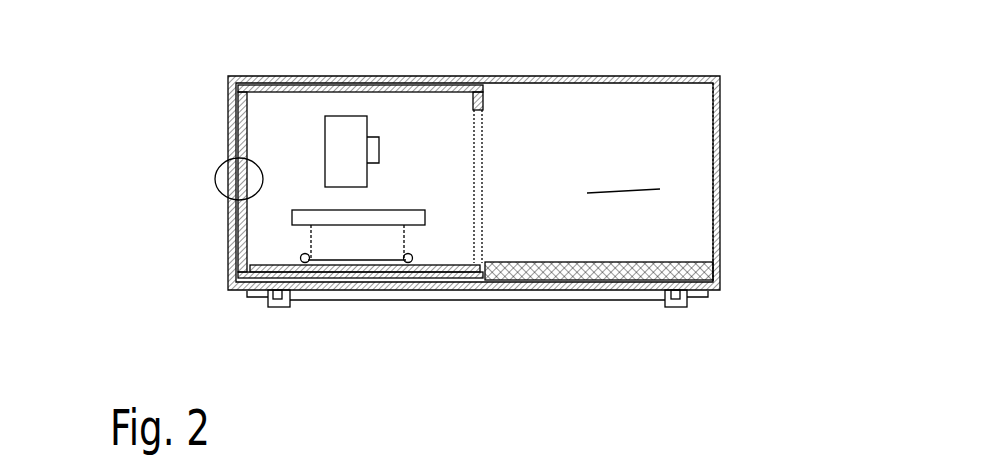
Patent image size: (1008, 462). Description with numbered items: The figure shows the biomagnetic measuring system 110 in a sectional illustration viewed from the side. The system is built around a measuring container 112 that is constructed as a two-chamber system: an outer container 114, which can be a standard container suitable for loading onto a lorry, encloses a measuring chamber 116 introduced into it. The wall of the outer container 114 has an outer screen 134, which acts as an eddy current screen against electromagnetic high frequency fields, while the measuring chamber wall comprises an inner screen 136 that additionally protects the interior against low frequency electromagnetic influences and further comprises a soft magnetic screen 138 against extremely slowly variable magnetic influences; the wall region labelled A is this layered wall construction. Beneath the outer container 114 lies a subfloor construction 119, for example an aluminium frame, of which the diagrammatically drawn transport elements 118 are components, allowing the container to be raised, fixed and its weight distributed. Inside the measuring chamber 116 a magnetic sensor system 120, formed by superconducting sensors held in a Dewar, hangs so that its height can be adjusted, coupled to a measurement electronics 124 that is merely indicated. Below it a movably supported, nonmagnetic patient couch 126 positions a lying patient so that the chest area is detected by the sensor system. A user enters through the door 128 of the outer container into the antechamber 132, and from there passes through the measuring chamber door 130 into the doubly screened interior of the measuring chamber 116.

The biomagnetic measuring system 110 is at (644, 48).
The measuring container 112 is at (500, 76).
The outer container 114 is at (307, 76).
The measuring chamber 116 is at (443, 270).
The transport elements 118 is at (263, 300).
The subfloor construction 119 is at (315, 295).
The magnetic sensor system 120 is at (340, 177).
The measurement electronics 124 is at (381, 146).
The patient couch 126 is at (358, 218).
The door of the outer container 128 is at (720, 142).
The measuring chamber door 130 is at (482, 152).
The antechamber 132 is at (623, 175).
The outer screen 134 is at (478, 101).
The inner screen 136 is at (247, 118).
The magnetic screen 138 is at (360, 275).
The detail A is at (215, 180).